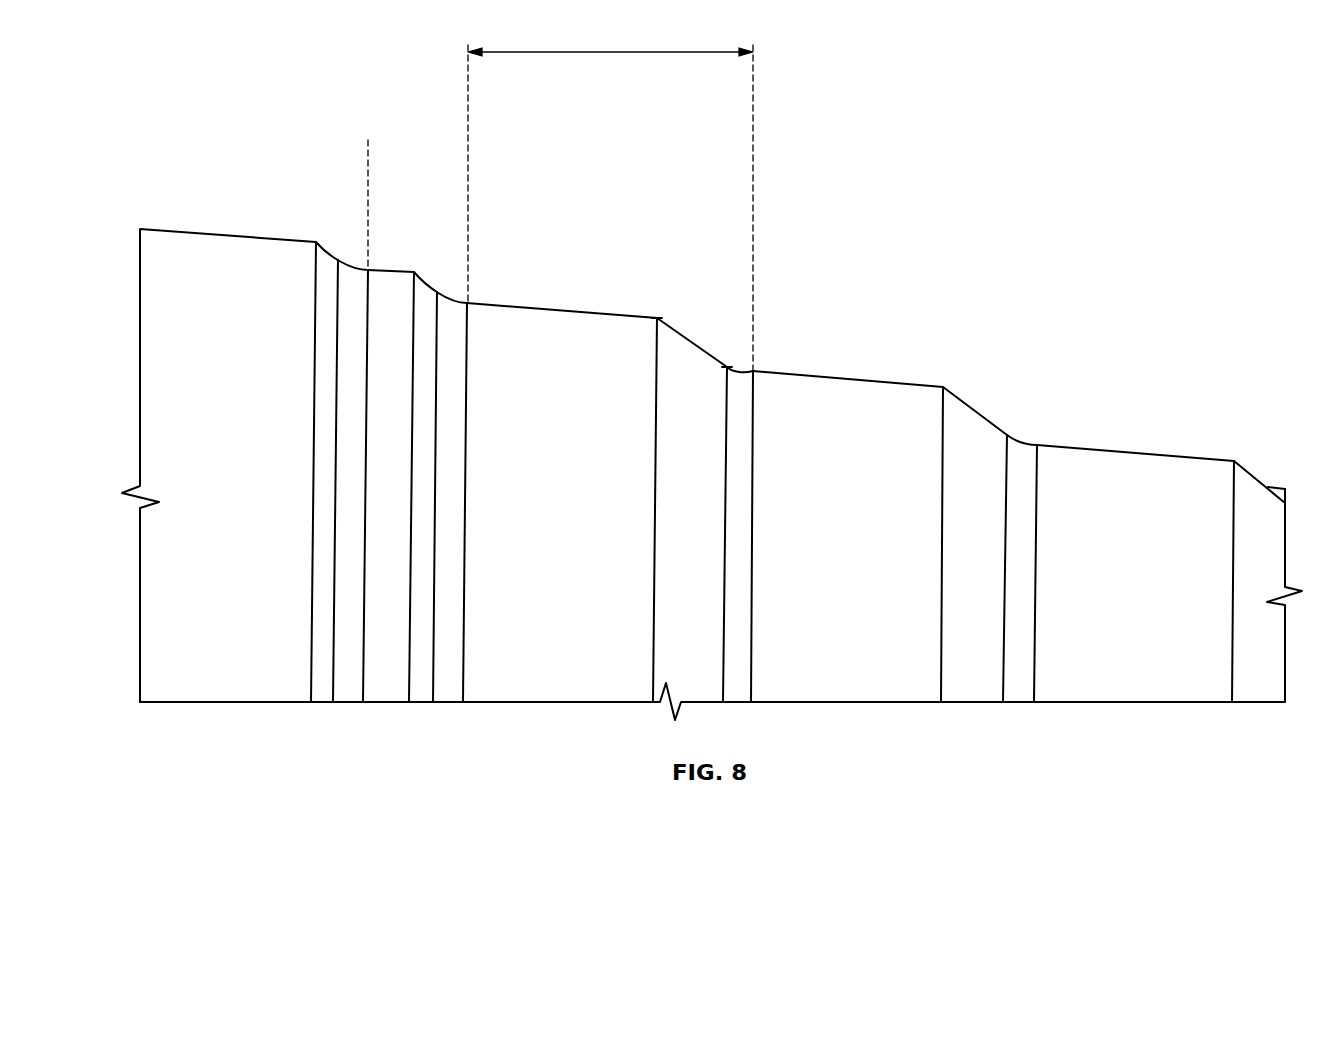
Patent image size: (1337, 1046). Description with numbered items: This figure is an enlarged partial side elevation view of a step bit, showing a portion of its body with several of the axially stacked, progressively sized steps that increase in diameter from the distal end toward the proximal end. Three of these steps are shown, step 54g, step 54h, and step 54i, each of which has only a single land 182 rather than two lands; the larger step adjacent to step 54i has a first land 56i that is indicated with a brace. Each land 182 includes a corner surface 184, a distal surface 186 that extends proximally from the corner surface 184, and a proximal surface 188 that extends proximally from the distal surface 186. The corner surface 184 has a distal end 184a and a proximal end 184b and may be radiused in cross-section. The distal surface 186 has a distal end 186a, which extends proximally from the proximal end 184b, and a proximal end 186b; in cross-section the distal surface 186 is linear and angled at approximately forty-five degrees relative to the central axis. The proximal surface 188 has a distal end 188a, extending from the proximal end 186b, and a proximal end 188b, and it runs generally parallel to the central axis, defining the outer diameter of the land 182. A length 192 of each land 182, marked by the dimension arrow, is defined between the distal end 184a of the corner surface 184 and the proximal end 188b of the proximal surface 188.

The length 192 is at (590, 52).
The first land 56i is at (468, 152).
The land 182 is at (753, 152).
The step 54i is at (666, 437).
The proximal end of proximal surface 188b is at (468, 303).
The proximal surface 188 is at (527, 305).
The distal end of proximal surface 188a is at (657, 318).
The proximal end of distal surface 186b is at (659, 318).
The distal surface 186 is at (696, 342).
The distal end of distal surface 186a is at (727, 367).
The corner surface 184 is at (753, 369).
The distal end of corner surface 184a is at (753, 372).
The proximal end of corner surface 184b is at (727, 369).
The step 54h is at (880, 427).
The step 54g is at (1108, 483).